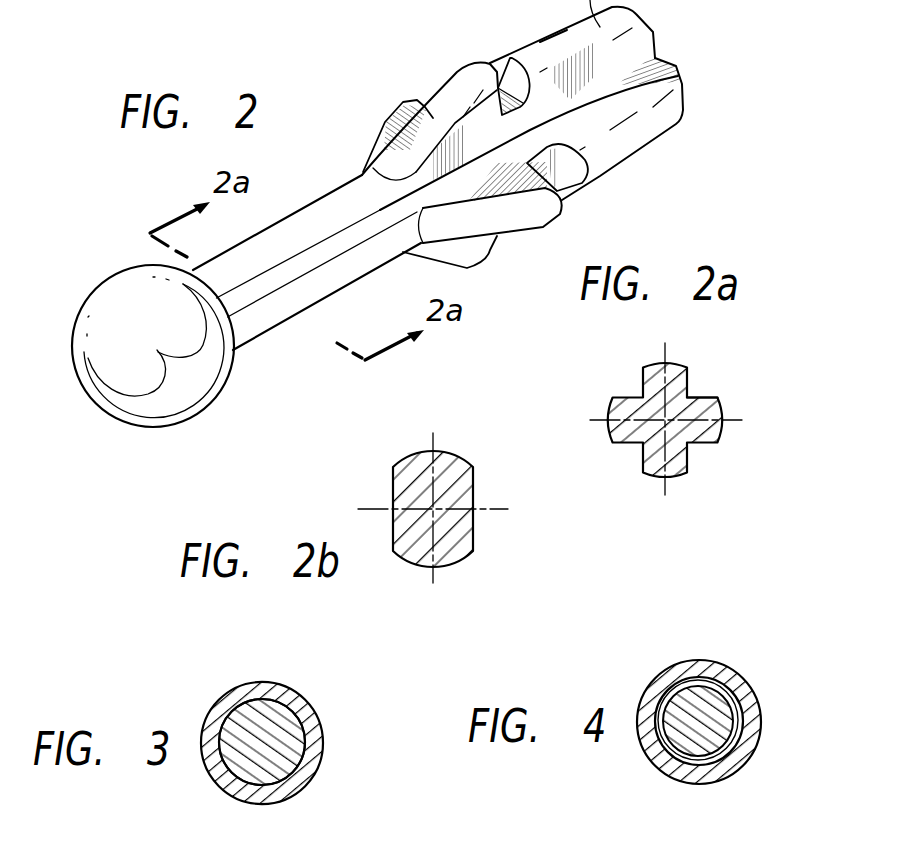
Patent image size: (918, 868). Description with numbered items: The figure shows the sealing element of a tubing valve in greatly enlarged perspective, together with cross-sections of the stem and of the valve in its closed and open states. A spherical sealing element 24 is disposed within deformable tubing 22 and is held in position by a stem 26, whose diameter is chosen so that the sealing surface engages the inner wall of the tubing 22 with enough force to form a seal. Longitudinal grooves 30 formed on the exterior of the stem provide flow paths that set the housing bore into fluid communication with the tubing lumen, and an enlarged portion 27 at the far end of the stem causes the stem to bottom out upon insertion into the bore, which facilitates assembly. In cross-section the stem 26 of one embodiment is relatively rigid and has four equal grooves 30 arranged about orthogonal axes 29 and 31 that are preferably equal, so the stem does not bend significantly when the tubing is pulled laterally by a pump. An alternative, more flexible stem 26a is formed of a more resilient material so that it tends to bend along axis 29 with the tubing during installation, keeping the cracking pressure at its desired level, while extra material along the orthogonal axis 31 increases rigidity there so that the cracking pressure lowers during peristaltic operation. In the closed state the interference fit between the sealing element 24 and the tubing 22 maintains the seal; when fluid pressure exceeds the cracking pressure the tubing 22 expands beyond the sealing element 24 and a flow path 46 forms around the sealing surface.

In FIG. 3, the tubing 22 is at (213, 718).
In FIG. 4, the tubing 22 is at (653, 753).
In FIG. 2, the spherical sealing element 24 is at (145, 296).
In FIG. 3, the spherical sealing element 24 is at (300, 787).
In FIG. 4, the spherical sealing element 24 is at (733, 761).
In FIG. 2, the stem 26 is at (435, 232).
In FIG. 2a, the stem 26 is at (698, 428).
In FIG. 2b, the alternative shaft 26a is at (403, 492).
In FIG. 2, the enlarged portion 27 is at (484, 64).
In FIG. 2a, the axis 29 is at (735, 421).
In FIG. 2b, the axis 29 is at (490, 512).
In FIG. 2, the longitudinal grooves 30 is at (280, 286).
In FIG. 2a, the longitudinal grooves 30 is at (689, 398).
In FIG. 2a, the orthogonal axis 31 is at (668, 353).
In FIG. 2b, the orthogonal axis 31 is at (434, 437).
In FIG. 4, the flow path 46 is at (673, 683).